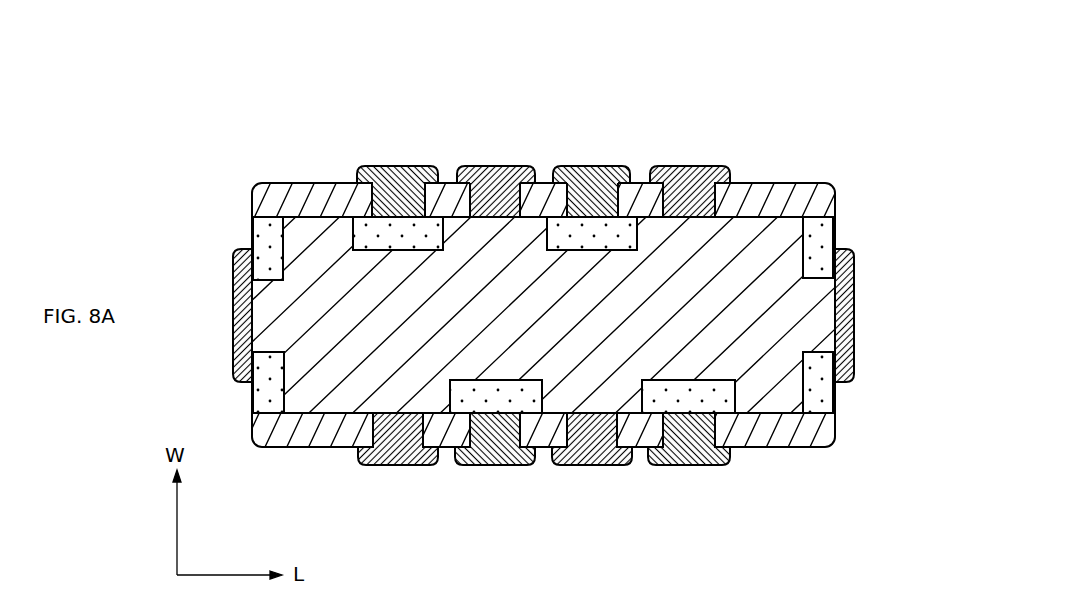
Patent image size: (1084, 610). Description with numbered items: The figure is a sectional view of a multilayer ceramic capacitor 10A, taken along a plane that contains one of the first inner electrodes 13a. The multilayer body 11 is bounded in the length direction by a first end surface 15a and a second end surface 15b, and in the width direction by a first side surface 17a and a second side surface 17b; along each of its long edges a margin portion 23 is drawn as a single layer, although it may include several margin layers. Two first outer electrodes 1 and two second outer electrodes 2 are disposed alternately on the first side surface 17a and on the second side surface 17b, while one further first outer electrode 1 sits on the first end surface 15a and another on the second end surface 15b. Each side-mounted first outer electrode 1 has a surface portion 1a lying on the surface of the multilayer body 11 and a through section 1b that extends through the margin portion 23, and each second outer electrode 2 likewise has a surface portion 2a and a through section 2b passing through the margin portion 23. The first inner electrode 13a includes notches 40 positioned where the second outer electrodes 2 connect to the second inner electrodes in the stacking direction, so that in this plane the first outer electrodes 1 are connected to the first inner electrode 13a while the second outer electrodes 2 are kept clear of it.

The multilayer ceramic capacitor 10A is at (318, 115).
The multilayer body 11 is at (297, 183).
The first inner electrode 13a is at (803, 291).
The first end surface 15a is at (250, 230).
The second end surface 15b is at (838, 392).
The first side surface 17a is at (768, 448).
The second side surface 17b is at (803, 184).
The margin portion 23 is at (838, 201).
The first outer electrode 1 is at (551, 303).
The surface portion 1a is at (497, 172).
The through section 1b is at (463, 178).
The second outer electrode 2 is at (543, 302).
The surface portion 2a is at (595, 176).
The through section 2b is at (627, 176).
The notch 40 is at (398, 235).